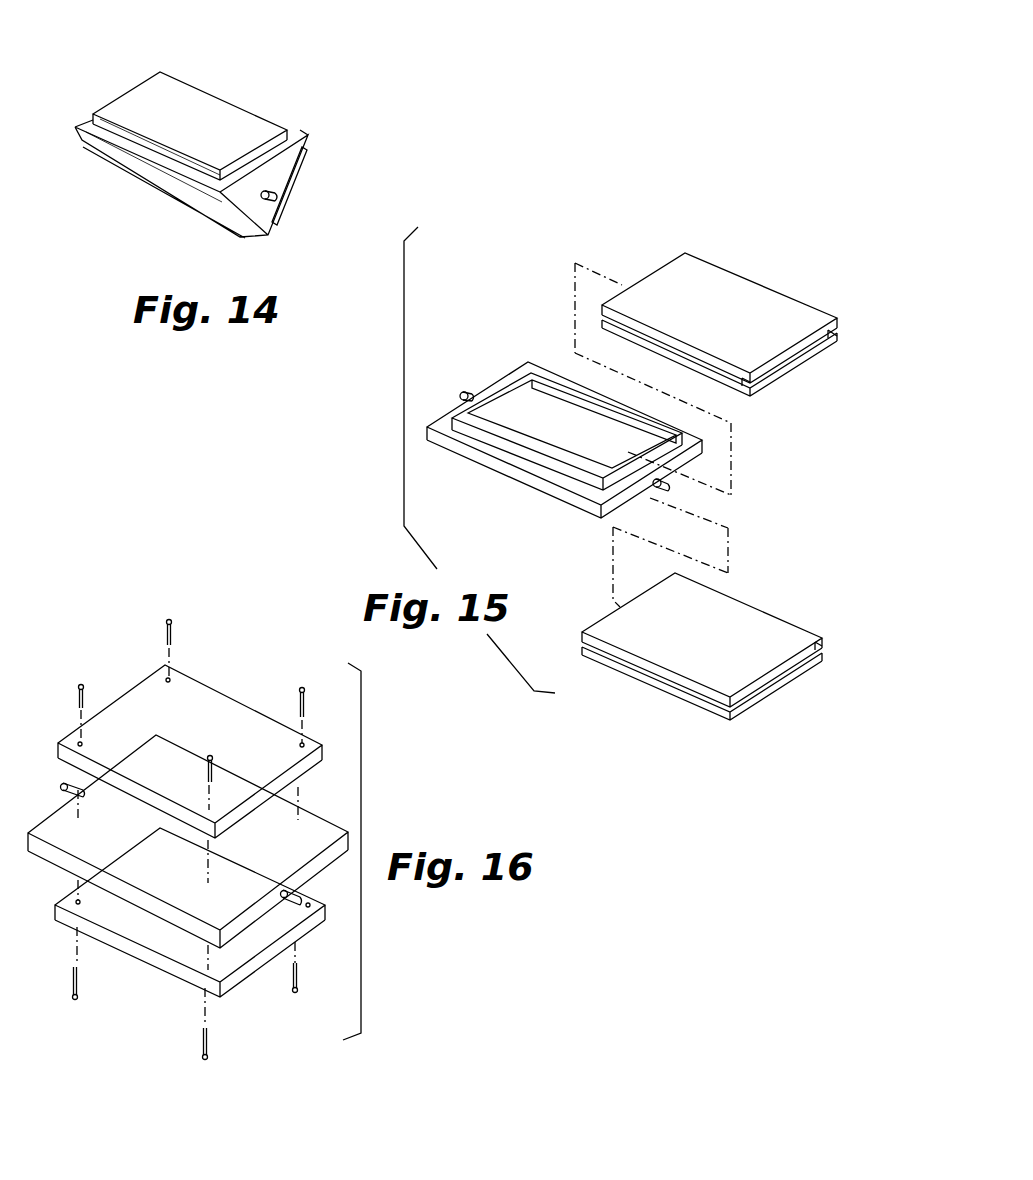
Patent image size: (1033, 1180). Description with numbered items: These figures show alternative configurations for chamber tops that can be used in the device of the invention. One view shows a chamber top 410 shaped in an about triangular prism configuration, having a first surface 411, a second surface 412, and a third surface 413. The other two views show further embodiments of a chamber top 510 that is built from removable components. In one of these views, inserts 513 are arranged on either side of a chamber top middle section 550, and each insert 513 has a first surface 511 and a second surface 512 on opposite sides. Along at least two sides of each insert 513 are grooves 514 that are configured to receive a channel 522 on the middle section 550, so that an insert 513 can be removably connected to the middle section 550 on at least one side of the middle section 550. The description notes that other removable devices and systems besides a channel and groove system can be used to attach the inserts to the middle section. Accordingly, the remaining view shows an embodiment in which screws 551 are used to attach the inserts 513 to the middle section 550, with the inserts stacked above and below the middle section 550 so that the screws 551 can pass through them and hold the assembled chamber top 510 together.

In FIG. 14, the chamber top 410 is at (271, 70).
In FIG. 14, the first surface 411 is at (190, 104).
In FIG. 14, the second surface 412 is at (302, 168).
In FIG. 14, the third surface 413 is at (150, 190).
In FIG. 15, the chamber top 510 is at (513, 315).
In FIG. 15, the first surface 511 is at (733, 312).
In FIG. 15, the second surface 512 is at (768, 393).
In FIG. 15, the insert 513 is at (811, 361).
In FIG. 16, the insert 513 is at (240, 705).
In FIG. 15, the groove 514 is at (825, 644).
In FIG. 15, the channel 522 is at (490, 484).
In FIG. 15, the middle section 550 is at (545, 438).
In FIG. 16, the middle section 550 is at (338, 817).
In FIG. 16, the screw 551 is at (166, 622).